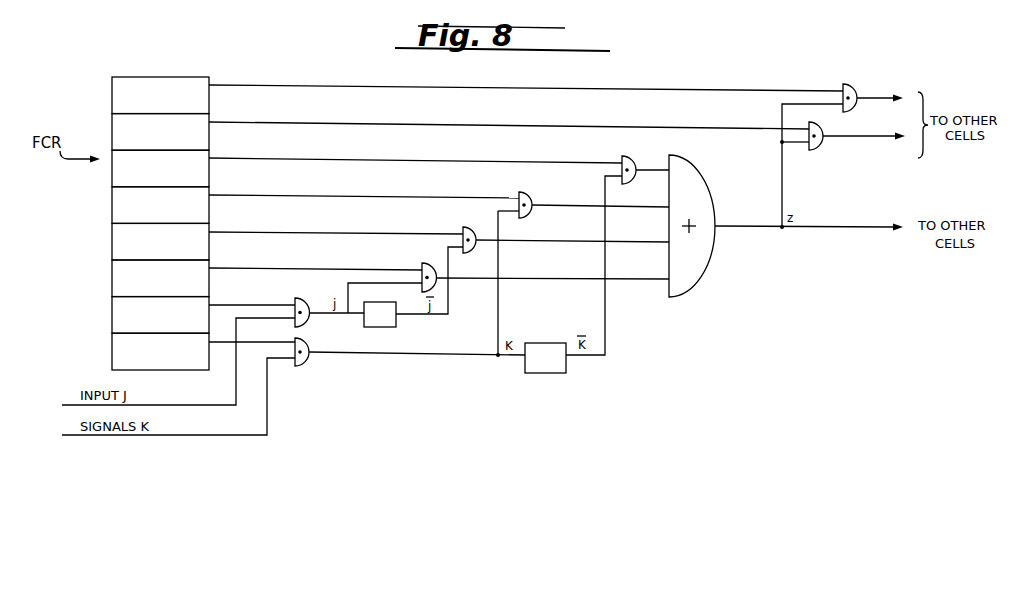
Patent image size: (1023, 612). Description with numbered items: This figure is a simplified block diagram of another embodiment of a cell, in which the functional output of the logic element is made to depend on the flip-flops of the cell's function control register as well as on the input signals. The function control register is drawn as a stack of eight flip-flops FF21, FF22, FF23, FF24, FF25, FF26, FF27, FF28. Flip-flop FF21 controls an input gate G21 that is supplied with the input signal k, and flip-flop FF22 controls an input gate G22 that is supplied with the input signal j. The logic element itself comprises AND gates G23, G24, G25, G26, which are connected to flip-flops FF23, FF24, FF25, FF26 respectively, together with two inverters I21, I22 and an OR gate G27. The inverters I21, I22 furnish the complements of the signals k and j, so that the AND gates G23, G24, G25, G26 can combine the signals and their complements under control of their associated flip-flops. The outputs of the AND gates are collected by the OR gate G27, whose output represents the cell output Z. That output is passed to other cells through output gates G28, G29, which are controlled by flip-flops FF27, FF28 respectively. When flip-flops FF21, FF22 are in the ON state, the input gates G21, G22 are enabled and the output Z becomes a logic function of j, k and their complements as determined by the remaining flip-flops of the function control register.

The input gate G21 is at (305, 364).
The input gate G22 is at (305, 325).
The AND gate G23 is at (437, 257).
The AND gate G24 is at (478, 220).
The AND gate G25 is at (528, 194).
The AND gate G26 is at (631, 158).
The OR gate G27 is at (688, 282).
The output gate G28 is at (816, 150).
The output gate G29 is at (852, 86).
The inverter I21 is at (573, 274).
The inverter I22 is at (413, 287).
The flip-flop FF21 is at (203, 351).
The flip-flop FF22 is at (203, 315).
The flip-flop FF23 is at (267, 278).
The flip-flop FF24 is at (287, 241).
The flip-flop FF25 is at (315, 205).
The flip-flop FF26 is at (367, 168).
The flip-flop FF27 is at (460, 132).
The flip-flop FF28 is at (477, 95).